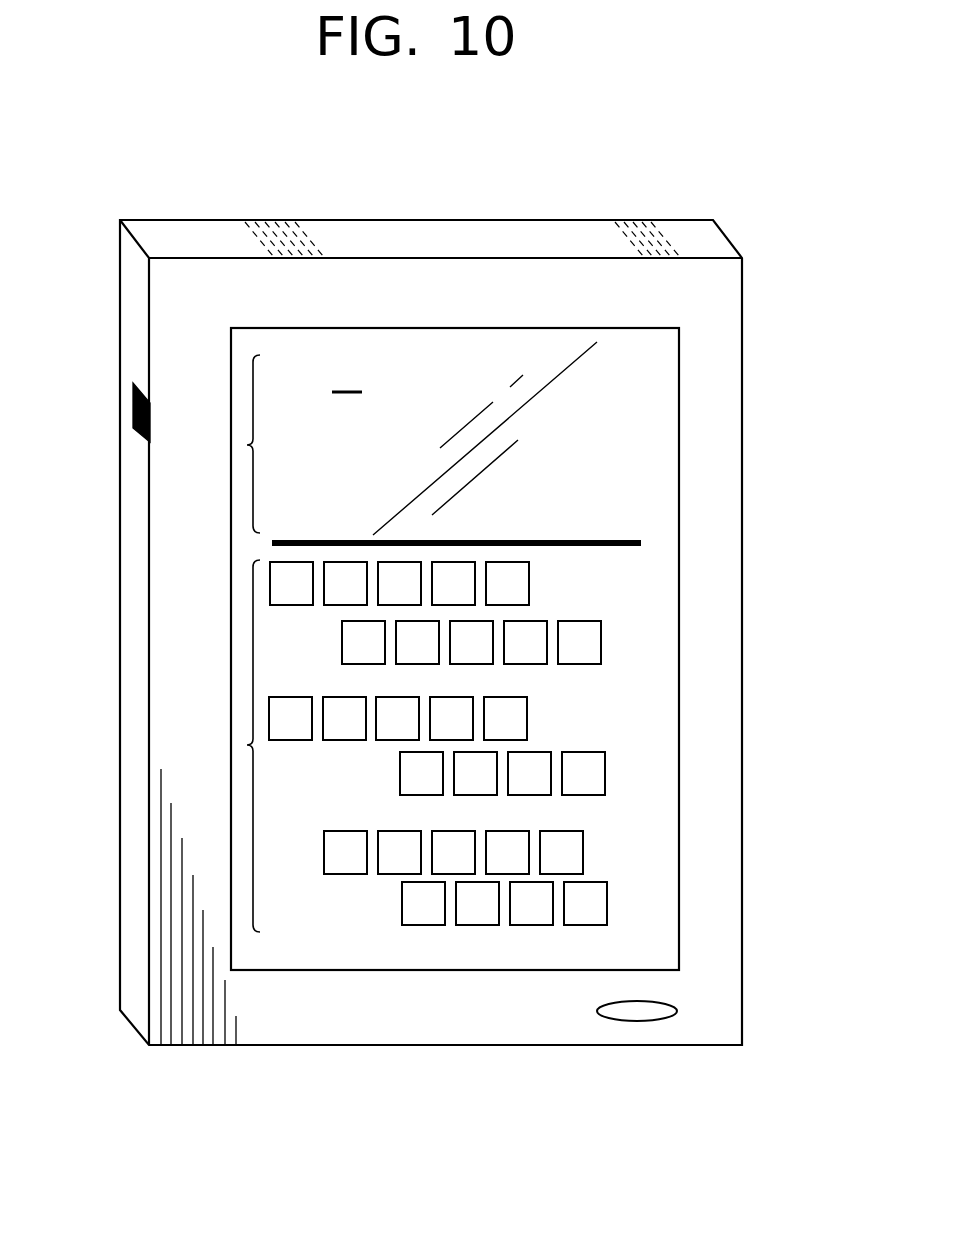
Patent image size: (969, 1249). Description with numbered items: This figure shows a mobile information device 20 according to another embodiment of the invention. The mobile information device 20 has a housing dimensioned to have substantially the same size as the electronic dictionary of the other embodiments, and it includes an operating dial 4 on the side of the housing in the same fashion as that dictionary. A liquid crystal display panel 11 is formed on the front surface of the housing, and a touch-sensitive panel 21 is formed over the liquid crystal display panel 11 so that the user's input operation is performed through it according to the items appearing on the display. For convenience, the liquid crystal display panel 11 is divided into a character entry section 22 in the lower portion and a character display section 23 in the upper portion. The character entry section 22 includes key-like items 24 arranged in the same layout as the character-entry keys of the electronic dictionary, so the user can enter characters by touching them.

The operating dial 4 is at (133, 412).
The liquid crystal display panel 11 is at (537, 373).
The mobile information device 20 is at (311, 1046).
The touch-sensitive panel 21 is at (690, 422).
The character entry section 22 is at (253, 745).
The character display section 23 is at (253, 445).
The key-like items 24 is at (592, 588).